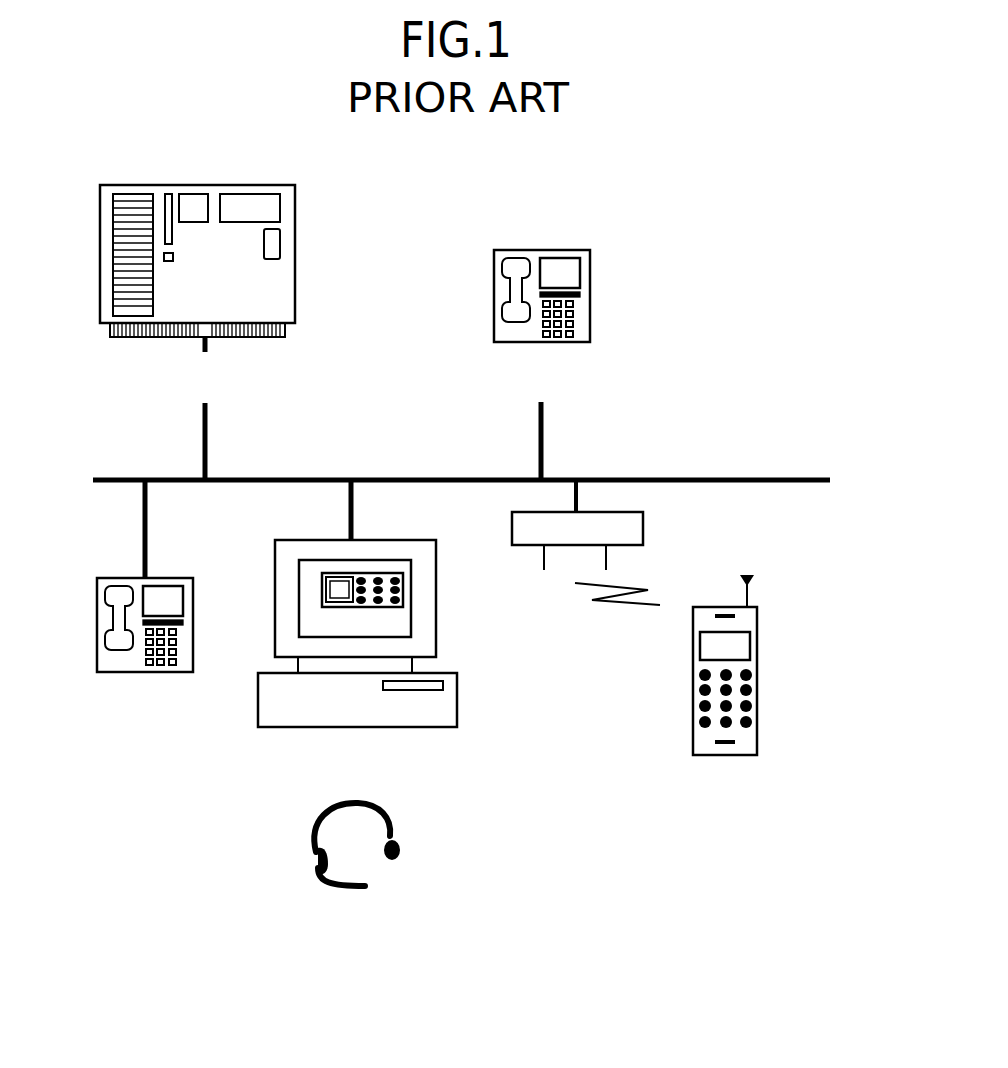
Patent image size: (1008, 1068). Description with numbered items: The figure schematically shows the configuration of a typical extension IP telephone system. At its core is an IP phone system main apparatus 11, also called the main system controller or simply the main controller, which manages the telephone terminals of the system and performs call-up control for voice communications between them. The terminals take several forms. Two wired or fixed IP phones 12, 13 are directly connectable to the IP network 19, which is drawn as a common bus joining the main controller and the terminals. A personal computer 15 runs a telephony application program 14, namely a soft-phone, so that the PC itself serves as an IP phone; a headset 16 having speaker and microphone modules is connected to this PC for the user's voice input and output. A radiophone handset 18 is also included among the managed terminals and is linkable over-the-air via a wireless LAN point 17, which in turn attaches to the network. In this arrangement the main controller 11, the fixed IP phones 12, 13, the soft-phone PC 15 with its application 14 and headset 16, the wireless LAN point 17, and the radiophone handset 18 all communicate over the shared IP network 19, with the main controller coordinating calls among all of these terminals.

The IP phone system main apparatus 11 is at (209, 329).
The IP phone 12 is at (587, 337).
The IP phone 13 is at (168, 599).
The telephony application program 14 is at (380, 585).
The PC (IP phone) 15 is at (402, 626).
The headset 16 is at (408, 865).
The wireless LAN point 17 is at (634, 542).
The radiophone handset 18 is at (766, 688).
The IP network 19 is at (500, 437).